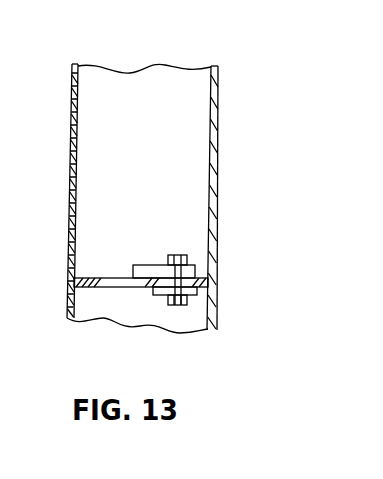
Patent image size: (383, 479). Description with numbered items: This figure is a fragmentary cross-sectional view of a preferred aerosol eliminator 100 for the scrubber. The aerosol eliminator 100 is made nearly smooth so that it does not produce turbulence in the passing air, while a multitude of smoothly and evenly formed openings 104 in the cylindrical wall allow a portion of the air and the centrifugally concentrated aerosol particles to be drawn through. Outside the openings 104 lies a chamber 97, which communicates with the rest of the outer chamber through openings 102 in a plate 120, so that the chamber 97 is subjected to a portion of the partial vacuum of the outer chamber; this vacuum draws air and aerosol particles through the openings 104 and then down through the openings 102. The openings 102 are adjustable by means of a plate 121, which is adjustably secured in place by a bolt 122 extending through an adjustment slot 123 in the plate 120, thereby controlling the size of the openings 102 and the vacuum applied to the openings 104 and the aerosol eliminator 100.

The chamber 97 is at (195, 132).
The aerosol eliminator 100 is at (68, 181).
The openings 102 is at (103, 280).
The openings 104 is at (77, 124).
The plate 120 is at (88, 276).
The plate 121 is at (148, 265).
The bolt 122 is at (178, 257).
The adjustment slot 123 is at (165, 289).